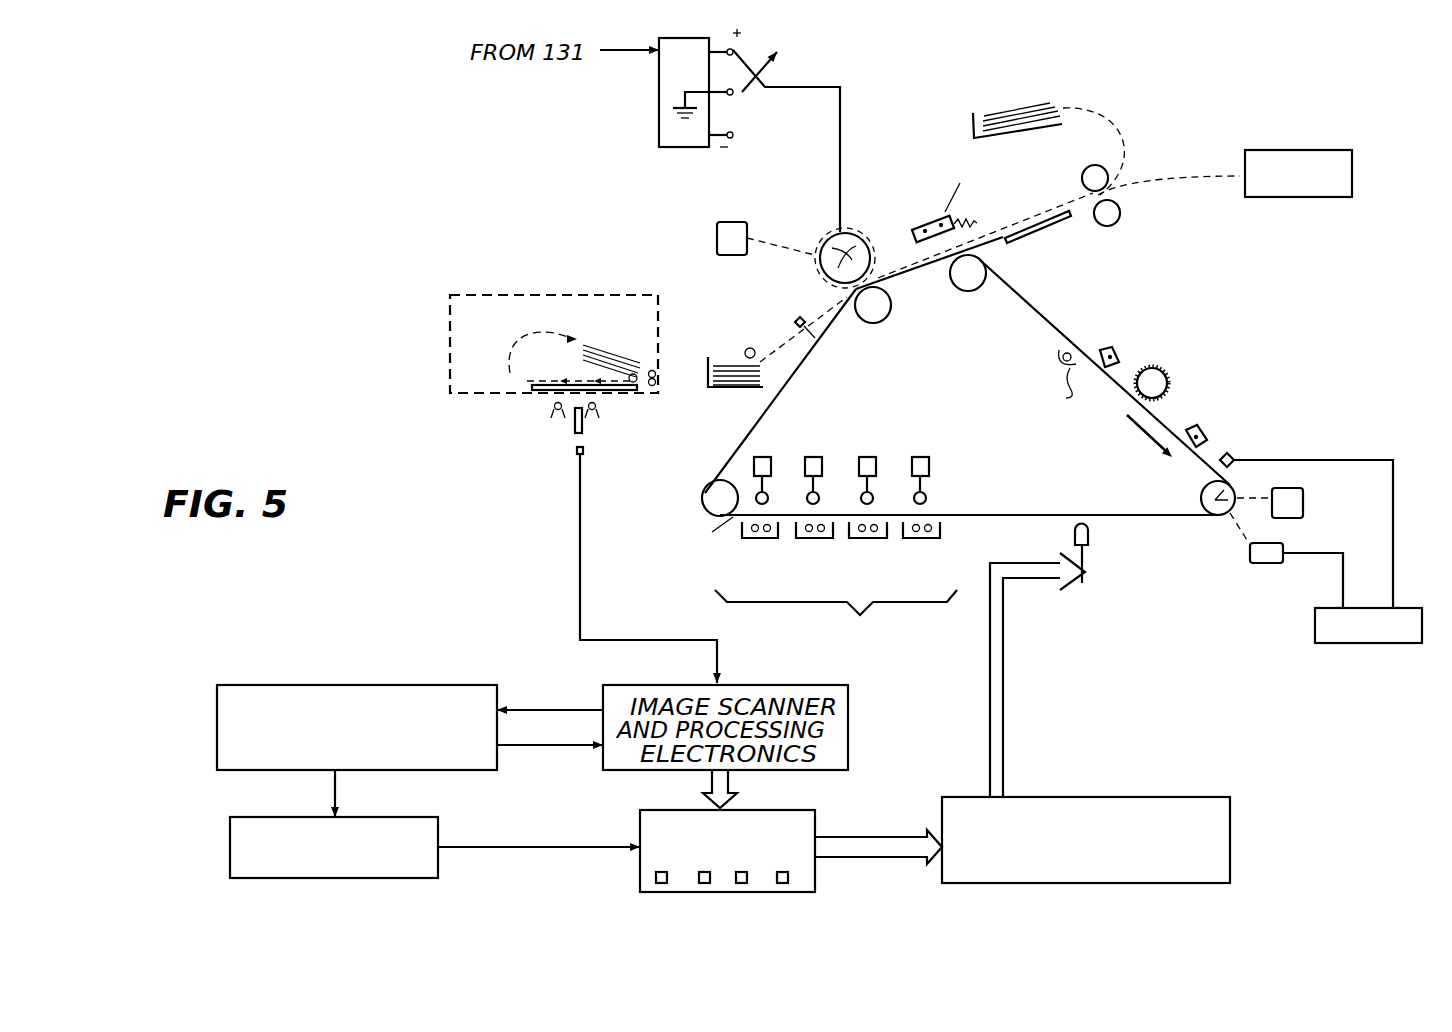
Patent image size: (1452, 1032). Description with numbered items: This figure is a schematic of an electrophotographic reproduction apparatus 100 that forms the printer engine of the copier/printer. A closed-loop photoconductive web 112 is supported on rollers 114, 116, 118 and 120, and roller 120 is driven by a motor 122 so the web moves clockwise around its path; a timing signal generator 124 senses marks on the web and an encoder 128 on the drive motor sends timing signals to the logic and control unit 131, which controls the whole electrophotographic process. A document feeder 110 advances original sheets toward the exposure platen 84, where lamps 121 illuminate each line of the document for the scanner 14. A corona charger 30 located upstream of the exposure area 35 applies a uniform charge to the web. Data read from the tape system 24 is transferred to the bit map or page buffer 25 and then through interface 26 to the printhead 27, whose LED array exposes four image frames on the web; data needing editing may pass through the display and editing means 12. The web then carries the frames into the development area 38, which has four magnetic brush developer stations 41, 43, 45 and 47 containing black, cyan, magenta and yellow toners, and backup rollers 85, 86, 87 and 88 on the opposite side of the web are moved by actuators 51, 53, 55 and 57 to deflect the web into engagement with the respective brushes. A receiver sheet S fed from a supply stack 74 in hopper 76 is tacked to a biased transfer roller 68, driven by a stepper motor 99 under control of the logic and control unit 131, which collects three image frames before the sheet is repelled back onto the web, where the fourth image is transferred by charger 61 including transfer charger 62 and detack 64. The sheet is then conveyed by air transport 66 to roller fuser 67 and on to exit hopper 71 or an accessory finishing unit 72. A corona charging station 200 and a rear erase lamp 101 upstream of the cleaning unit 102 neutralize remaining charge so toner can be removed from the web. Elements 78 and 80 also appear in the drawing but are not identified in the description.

The display and editing means 12 is at (217, 733).
The scanner 14 is at (583, 452).
The tape system 24 is at (230, 835).
The bit map or page buffer 25 is at (640, 818).
The interface 26 is at (1233, 820).
The printhead 27 is at (1075, 532).
The corona charger 30 is at (1202, 426).
The exposure area 35 is at (1103, 547).
The development area 38 is at (836, 619).
The developer station 41 is at (756, 555).
The developer station 43 is at (809, 557).
The developer station 45 is at (868, 555).
The developer station 47 is at (921, 557).
The actuator 51 is at (762, 455).
The actuator 53 is at (817, 455).
The actuator 55 is at (877, 457).
The actuator 57 is at (930, 460).
The charger 61 is at (967, 188).
The transfer charger 62 is at (921, 226).
The detack 64 is at (980, 213).
The air transport 66 is at (1047, 236).
The roller fuser 67 is at (1125, 215).
The transfer roller 68 is at (829, 235).
The exit hopper 71 is at (975, 112).
The accessory finishing unit 72 is at (1352, 178).
The supply stack 74 is at (710, 362).
The hopper 76 is at (747, 390).
The feed roller 78 is at (745, 348).
The sheet sensor 80 is at (800, 320).
The exposure platen 84 is at (640, 392).
The backup roller 85 is at (710, 532).
The backup roller 86 is at (822, 490).
The backup roller 87 is at (913, 459).
The backup roller 88 is at (926, 498).
The stepper motor 99 is at (730, 223).
The electrophotographic reproduction apparatus 100 is at (1196, 347).
The rear erase lamp 101 is at (1069, 387).
The cleaning unit 102 is at (1165, 383).
The document feeder 110 is at (492, 294).
The photoconductive web 112 is at (1052, 318).
The roller 114 is at (969, 292).
The roller 116 is at (883, 321).
The roller 118 is at (707, 478).
The roller 120 is at (1200, 499).
The lamps 121 is at (550, 413).
The motor 122 is at (1303, 498).
The timing signal generator 124 is at (1233, 453).
The encoder 128 is at (1267, 567).
The logic and control unit 131 is at (1422, 617).
The corona charging station 200 is at (1112, 350).
The receiver sheet S is at (773, 357).